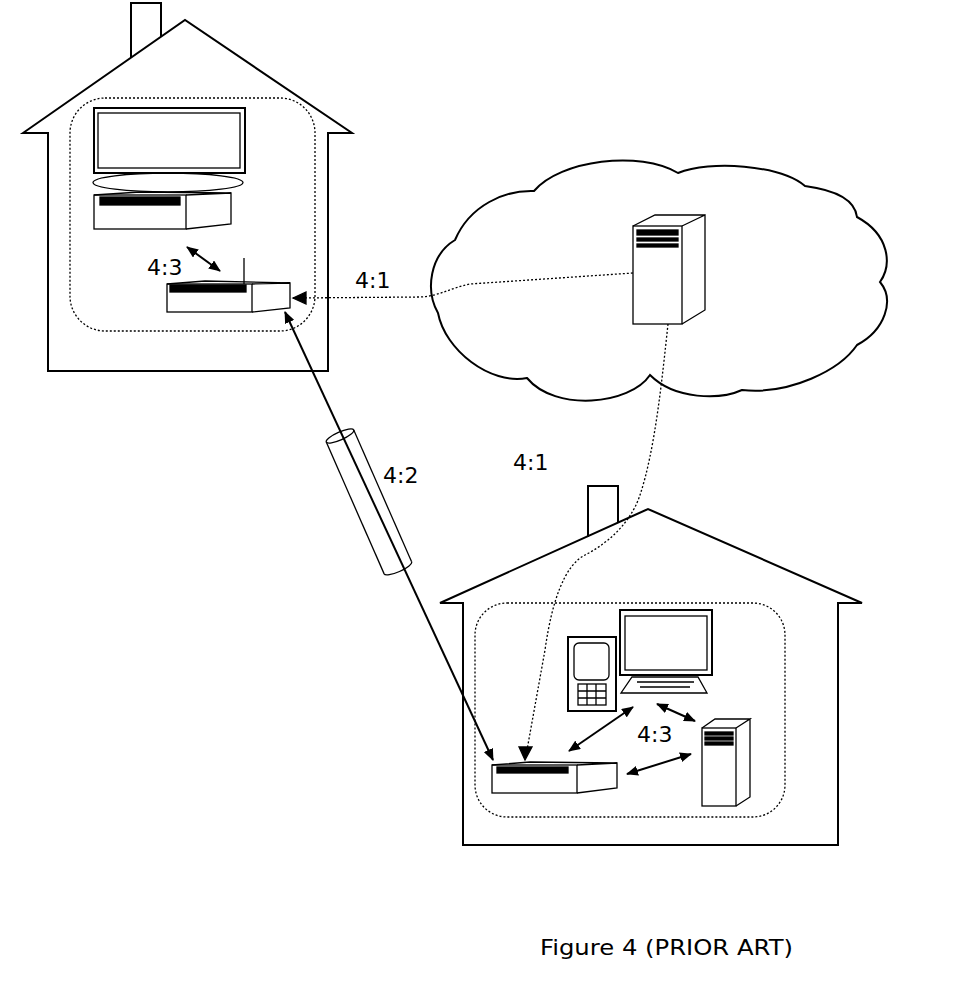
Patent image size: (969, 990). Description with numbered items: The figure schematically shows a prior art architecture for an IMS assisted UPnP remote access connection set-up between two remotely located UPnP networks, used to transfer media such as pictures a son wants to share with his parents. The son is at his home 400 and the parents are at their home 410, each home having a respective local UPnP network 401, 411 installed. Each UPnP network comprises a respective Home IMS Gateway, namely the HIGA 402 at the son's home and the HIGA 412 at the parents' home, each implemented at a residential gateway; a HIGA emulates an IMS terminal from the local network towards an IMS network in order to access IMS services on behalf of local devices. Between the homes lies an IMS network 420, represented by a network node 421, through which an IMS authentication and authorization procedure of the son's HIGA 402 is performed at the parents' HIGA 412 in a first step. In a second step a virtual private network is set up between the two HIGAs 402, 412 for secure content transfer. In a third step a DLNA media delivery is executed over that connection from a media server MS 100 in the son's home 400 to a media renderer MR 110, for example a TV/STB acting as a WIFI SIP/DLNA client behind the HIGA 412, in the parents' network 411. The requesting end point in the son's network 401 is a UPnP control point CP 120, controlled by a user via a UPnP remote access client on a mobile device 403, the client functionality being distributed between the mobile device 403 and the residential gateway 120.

The home of the parents 410 is at (263, 46).
The local UPnP network 411 is at (316, 153).
The media renderer (MR) 110 is at (245, 133).
The Home IMS Gateway (HIGA) 412 is at (208, 312).
The IMS network 420 is at (763, 168).
The network node 421 is at (732, 265).
The home of the son 400 is at (725, 547).
The local UPnP network 401 is at (785, 697).
The UPnP control point (CP) / residential gateway 120 is at (661, 612).
The UPnP remote access client / mobile device 403 is at (615, 637).
The Home IMS Gateway (HIGA) 402 is at (492, 786).
The media server (MS) 100 is at (700, 785).